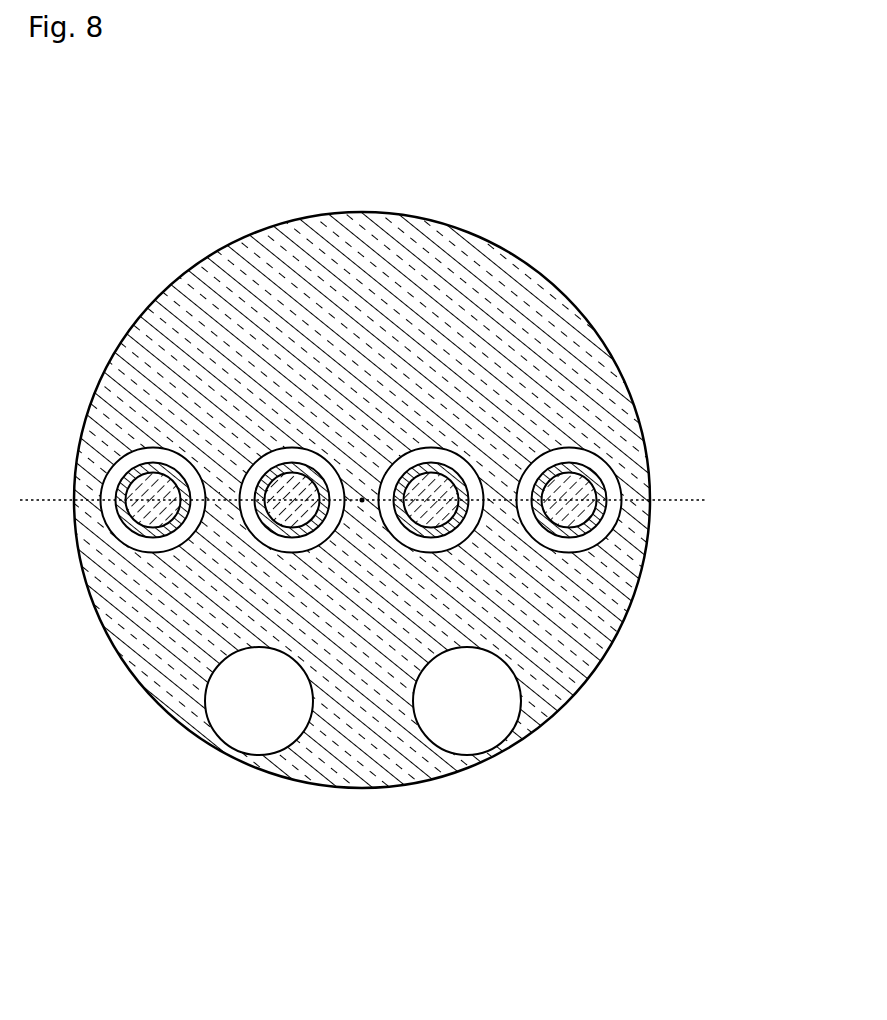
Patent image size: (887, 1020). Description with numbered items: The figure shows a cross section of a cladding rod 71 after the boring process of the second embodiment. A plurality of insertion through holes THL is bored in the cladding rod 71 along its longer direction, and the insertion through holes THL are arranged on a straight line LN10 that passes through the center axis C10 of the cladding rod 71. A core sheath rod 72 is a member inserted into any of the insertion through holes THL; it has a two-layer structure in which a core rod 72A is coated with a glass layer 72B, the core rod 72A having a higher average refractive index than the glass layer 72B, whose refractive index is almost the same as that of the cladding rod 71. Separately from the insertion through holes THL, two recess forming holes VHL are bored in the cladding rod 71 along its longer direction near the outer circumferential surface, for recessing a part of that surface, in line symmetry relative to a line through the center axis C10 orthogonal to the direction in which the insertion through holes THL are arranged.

The cladding rod 71 is at (620, 420).
The core sheath rod 72 is at (318, 533).
The core rod 72A is at (157, 507).
The glass layer 72B is at (126, 508).
The insertion through hole THL is at (156, 478).
The recess forming hole VHL is at (247, 743).
The center axis C10 is at (362, 497).
The straight line LN10 is at (697, 500).